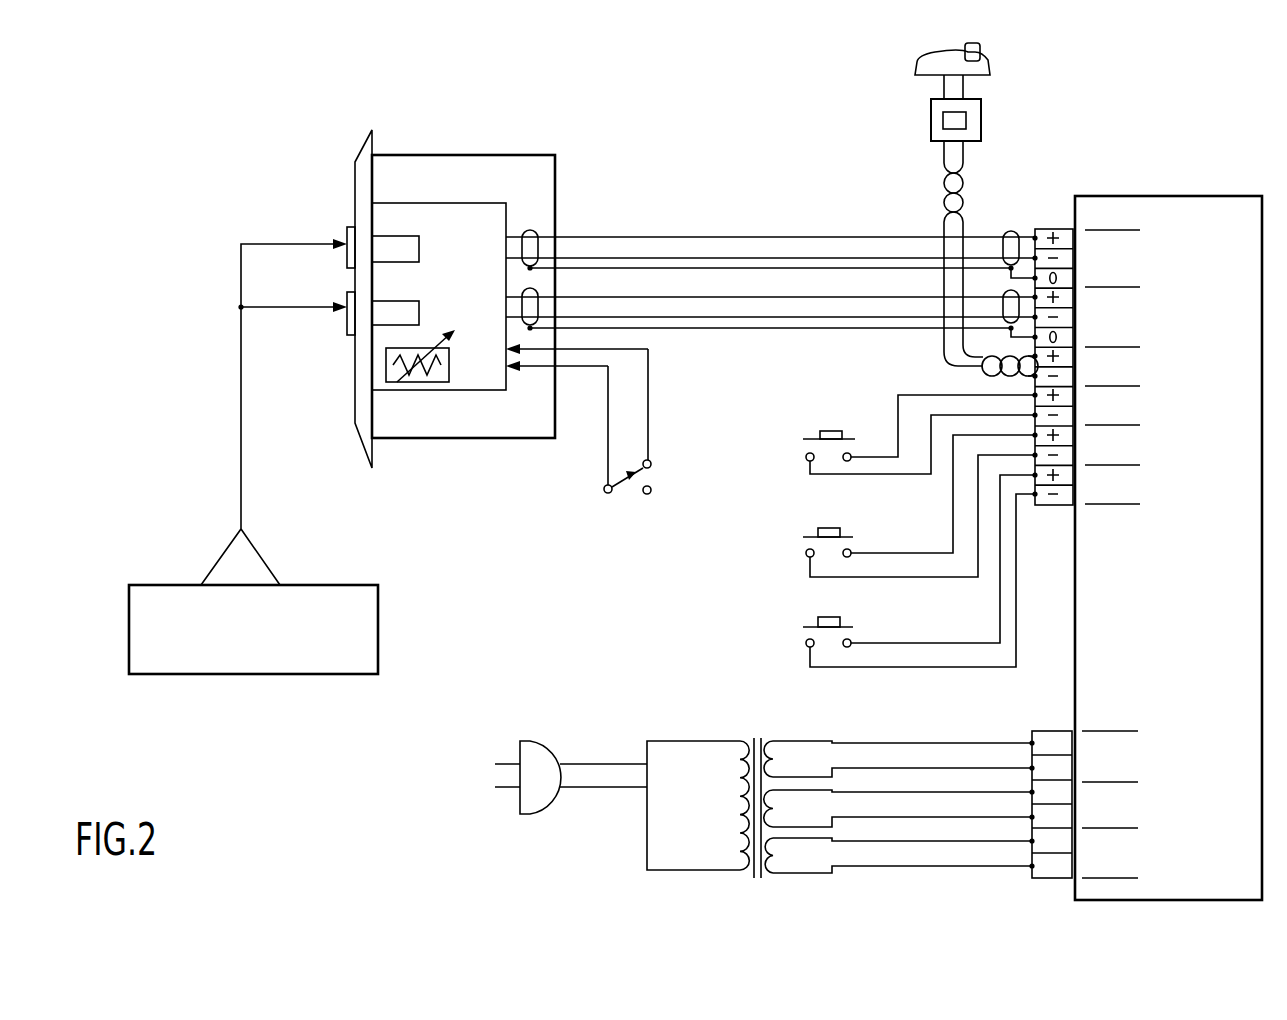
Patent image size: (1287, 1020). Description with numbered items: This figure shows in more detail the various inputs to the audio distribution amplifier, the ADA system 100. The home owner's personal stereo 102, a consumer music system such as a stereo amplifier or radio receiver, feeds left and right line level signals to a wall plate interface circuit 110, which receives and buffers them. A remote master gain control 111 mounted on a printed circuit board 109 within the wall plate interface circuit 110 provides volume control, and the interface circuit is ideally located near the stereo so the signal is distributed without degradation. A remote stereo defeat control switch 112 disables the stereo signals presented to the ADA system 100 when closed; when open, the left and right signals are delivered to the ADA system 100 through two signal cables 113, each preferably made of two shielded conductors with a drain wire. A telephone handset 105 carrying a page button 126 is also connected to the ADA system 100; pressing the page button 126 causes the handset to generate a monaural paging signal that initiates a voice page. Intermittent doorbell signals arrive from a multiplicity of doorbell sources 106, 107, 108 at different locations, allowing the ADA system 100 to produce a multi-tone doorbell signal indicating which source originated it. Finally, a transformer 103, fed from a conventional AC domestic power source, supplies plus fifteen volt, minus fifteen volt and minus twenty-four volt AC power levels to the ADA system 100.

The ADA system 100 is at (1175, 196).
The stereo 102 is at (203, 674).
The transformer 103 is at (751, 733).
The telephone handset 105 is at (990, 63).
The doorbell source 106 is at (806, 457).
The doorbell source 107 is at (806, 553).
The doorbell source 108 is at (806, 643).
The printed circuit board 109 is at (447, 203).
The wall plate interface circuit 110 is at (410, 153).
The remote master gain control 111 is at (440, 383).
The remote stereo defeat control switch 112 is at (624, 494).
The signal cables 113 is at (650, 308).
The page button 126 is at (981, 118).